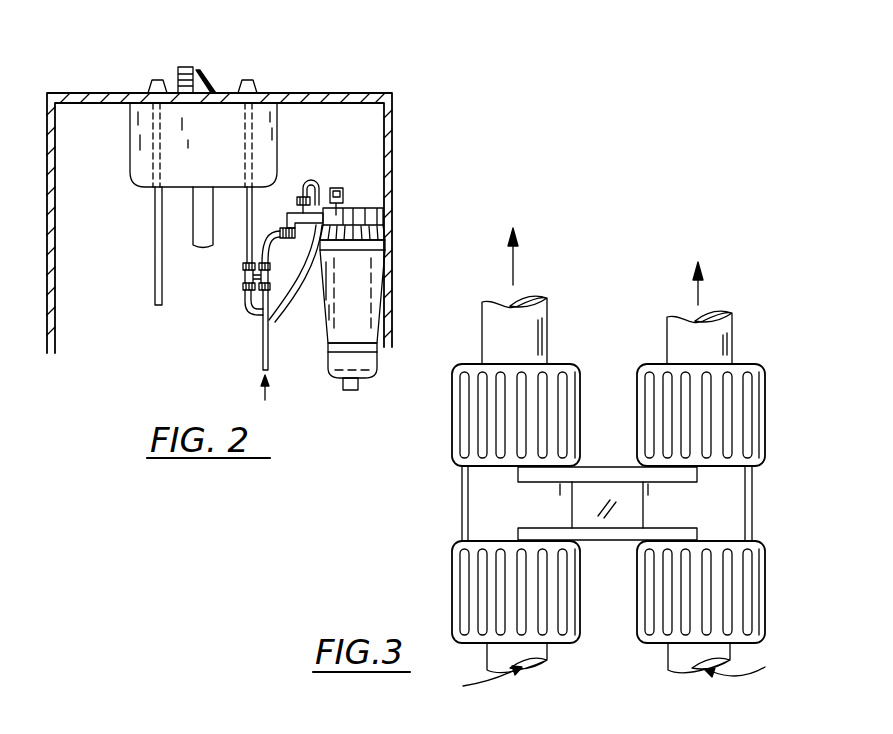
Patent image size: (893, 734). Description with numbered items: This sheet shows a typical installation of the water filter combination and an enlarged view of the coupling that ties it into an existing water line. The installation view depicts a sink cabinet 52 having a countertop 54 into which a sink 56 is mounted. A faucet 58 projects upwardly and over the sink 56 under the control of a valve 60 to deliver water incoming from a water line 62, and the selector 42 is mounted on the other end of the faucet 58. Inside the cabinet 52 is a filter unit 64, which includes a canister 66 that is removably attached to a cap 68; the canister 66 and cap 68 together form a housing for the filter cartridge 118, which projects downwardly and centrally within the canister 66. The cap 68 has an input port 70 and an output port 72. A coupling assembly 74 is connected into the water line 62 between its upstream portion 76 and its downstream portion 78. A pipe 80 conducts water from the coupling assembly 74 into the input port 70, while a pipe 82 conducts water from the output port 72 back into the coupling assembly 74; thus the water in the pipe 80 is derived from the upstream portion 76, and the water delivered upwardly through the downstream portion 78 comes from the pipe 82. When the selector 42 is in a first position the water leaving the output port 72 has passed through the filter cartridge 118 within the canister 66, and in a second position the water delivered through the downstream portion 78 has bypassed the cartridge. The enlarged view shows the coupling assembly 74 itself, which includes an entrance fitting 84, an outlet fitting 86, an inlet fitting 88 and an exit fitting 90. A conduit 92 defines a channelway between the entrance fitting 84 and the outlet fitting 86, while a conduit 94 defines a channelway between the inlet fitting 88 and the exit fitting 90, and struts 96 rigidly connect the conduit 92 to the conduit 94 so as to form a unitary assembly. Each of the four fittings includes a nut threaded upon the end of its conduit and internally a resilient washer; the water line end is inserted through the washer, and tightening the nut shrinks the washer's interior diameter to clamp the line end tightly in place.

In FIG. 2, the selector 42 is at (178, 68).
In FIG. 2, the sink cabinet 52 is at (392, 145).
In FIG. 2, the countertop 54 is at (350, 93).
In FIG. 2, the sink 56 is at (277, 152).
In FIG. 2, the faucet 58 is at (206, 82).
In FIG. 2, the valve 60 is at (247, 80).
In FIG. 2, the water line 62 is at (250, 366).
In FIG. 2, the filter unit 64 is at (335, 385).
In FIG. 2, the canister 66 is at (330, 357).
In FIG. 2, the cap 68 is at (385, 227).
In FIG. 2, the input port 70 is at (285, 226).
In FIG. 2, the output port 72 is at (300, 196).
In FIG. 2, the coupling assembly 74 is at (240, 279).
In FIG. 3, the coupling assembly 74 is at (452, 522).
In FIG. 2, the upstream portion 76 is at (260, 343).
In FIG. 3, the upstream portion 76 is at (487, 658).
In FIG. 2, the downstream portion 78 is at (245, 220).
In FIG. 3, the downstream portion 78 is at (667, 340).
In FIG. 2, the pipe 80 is at (255, 250).
In FIG. 3, the pipe 80 is at (548, 332).
In FIG. 2, the pipe 82 is at (279, 303).
In FIG. 3, the pipe 82 is at (668, 658).
In FIG. 3, the entrance fitting 84 is at (452, 600).
In FIG. 3, the outlet fitting 86 is at (452, 420).
In FIG. 3, the inlet fitting 88 is at (637, 626).
In FIG. 3, the exit fitting 90 is at (770, 342).
In FIG. 3, the conduit 92 is at (462, 486).
In FIG. 3, the conduit 94 is at (758, 502).
In FIG. 3, the struts 96 is at (602, 466).
In FIG. 2, the filter cartridge 118 is at (368, 358).